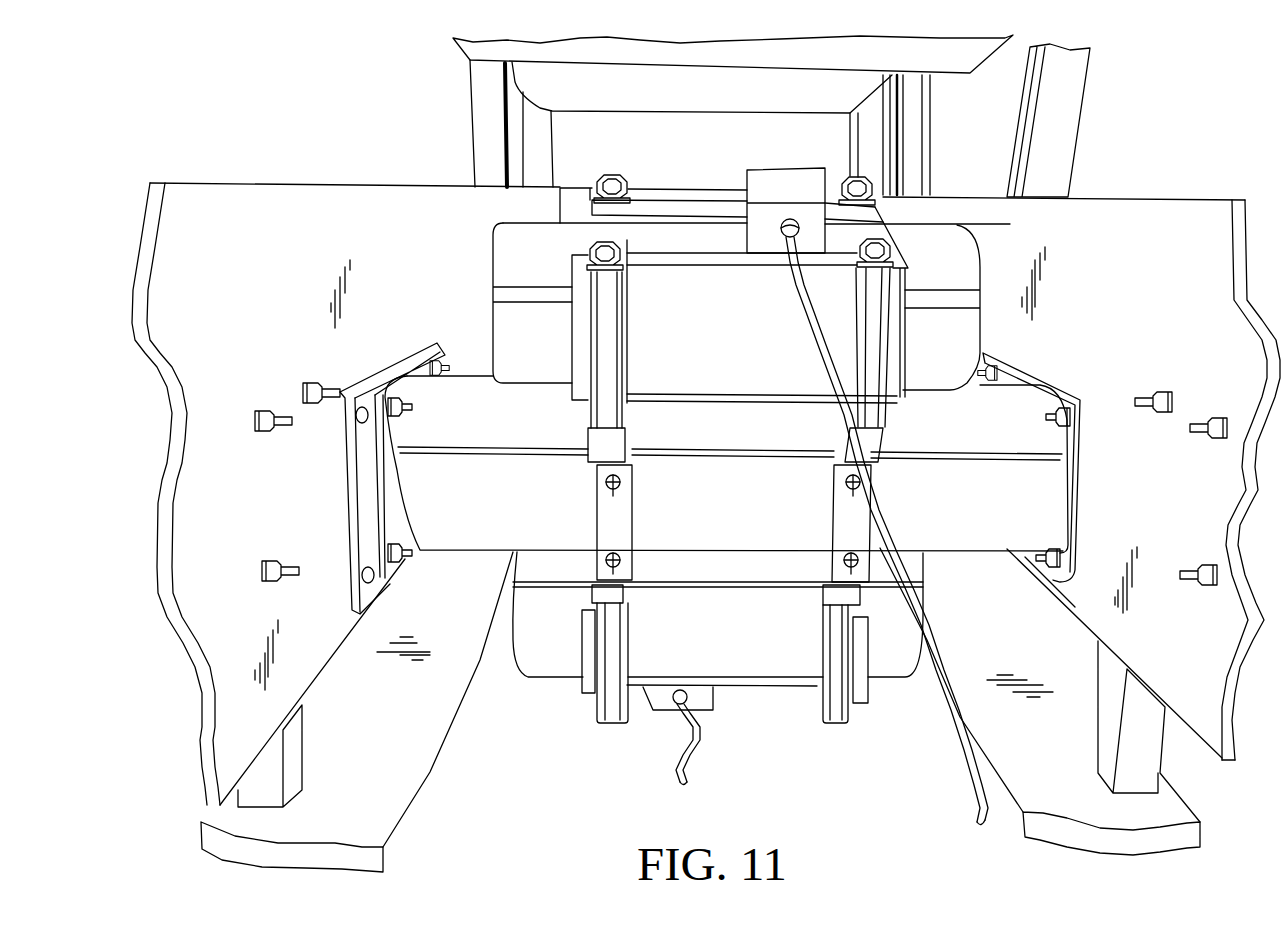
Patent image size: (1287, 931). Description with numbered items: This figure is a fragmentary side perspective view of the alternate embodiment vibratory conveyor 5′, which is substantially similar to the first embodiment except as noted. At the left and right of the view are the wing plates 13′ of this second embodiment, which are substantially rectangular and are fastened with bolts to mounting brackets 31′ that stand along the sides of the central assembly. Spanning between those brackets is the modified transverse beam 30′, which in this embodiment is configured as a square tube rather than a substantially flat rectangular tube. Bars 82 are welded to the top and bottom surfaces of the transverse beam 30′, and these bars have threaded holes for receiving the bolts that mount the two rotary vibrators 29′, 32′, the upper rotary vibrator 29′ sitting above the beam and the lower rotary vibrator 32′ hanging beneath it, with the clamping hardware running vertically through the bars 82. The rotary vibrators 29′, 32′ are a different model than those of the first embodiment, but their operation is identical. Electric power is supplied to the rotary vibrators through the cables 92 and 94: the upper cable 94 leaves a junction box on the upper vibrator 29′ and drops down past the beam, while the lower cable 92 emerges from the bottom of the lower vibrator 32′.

The vibratory conveyor 5′ is at (160, 112).
The wing plate 13′ is at (263, 309).
The rotary vibrator 29′ is at (697, 370).
The transverse beam 30′ is at (962, 540).
The angle mounting bracket 31′ is at (1080, 492).
The rotary vibrator 32′ is at (758, 665).
The bar 82 is at (590, 587).
The cable 92 is at (672, 742).
The cable 94 is at (793, 290).